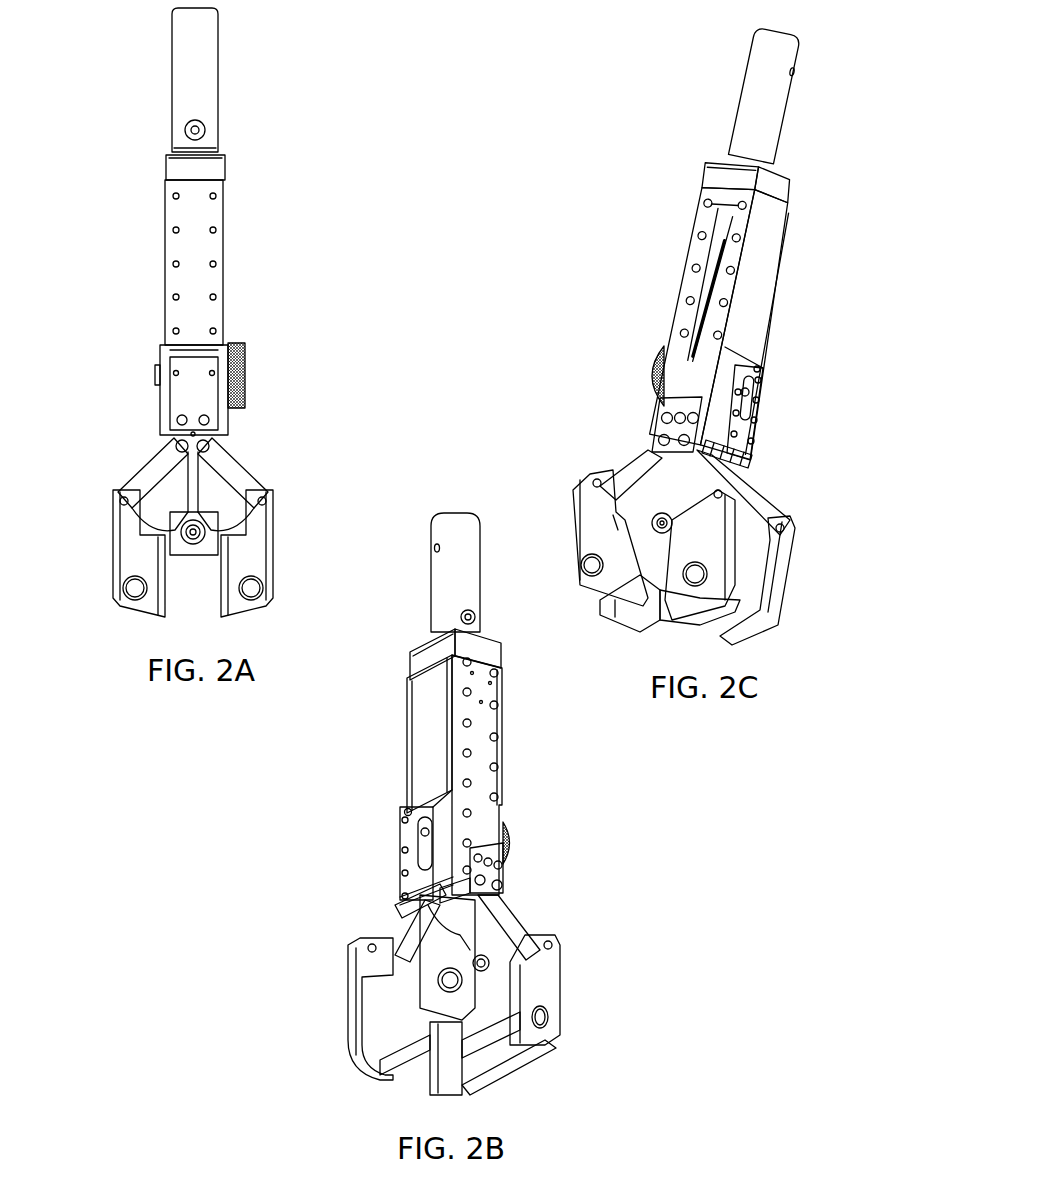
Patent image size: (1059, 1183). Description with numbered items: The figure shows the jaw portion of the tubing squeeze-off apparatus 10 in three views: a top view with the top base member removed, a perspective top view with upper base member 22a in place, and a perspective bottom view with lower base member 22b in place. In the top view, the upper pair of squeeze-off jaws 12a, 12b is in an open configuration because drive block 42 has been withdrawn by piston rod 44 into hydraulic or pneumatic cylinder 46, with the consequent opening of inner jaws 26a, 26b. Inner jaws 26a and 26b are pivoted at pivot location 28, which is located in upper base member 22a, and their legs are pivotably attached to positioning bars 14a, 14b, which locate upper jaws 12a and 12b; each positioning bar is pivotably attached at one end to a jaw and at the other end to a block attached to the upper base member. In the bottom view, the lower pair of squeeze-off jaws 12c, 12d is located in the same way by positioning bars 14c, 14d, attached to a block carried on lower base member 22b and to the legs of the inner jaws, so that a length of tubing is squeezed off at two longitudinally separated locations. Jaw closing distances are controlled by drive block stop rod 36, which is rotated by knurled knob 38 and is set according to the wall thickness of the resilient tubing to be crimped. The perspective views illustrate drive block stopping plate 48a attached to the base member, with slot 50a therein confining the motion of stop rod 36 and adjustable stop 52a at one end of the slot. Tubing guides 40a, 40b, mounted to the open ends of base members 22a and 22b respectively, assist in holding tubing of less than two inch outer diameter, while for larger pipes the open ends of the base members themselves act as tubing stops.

In FIG. 2A, the squeeze-off apparatus 10 is at (286, 133).
In FIG. 2A, the upper squeeze-off jaw 12a is at (99, 553).
In FIG. 2C, the upper squeeze-off jaw 12a is at (794, 580).
In FIG. 2B, the upper squeeze-off jaw 12a is at (366, 957).
In FIG. 2A, the upper squeeze-off jaw 12b is at (280, 553).
In FIG. 2B, the upper squeeze-off jaw 12b is at (585, 990).
In FIG. 2C, the lower squeeze-off jaw 12c is at (574, 538).
In FIG. 2C, the lower squeeze-off jaw 12d is at (760, 566).
In FIG. 2B, the lower squeeze-off jaw 12d is at (318, 1009).
In FIG. 2C, the positioning bar 14a is at (783, 488).
In FIG. 2B, the positioning bar 14a is at (356, 877).
In FIG. 2B, the positioning bar 14b is at (538, 906).
In FIG. 2C, the positioning bar 14c is at (607, 466).
In FIG. 2C, the positioning bar 14d is at (785, 442).
In FIG. 2B, the positioning bar 14d is at (344, 912).
In FIG. 2B, the upper base member 22a is at (497, 836).
In FIG. 2C, the lower base member 22b is at (692, 241).
In FIG. 2A, the inner jaw 26a is at (110, 484).
In FIG. 2B, the inner jaw 26a is at (341, 931).
In FIG. 2A, the inner jaw 26b is at (267, 482).
In FIG. 2B, the inner jaw 26b is at (561, 1076).
In FIG. 2A, the pivot location 28 is at (215, 577).
In FIG. 2C, the drive block stop rod 36 is at (792, 400).
In FIG. 2B, the drive block stop rod 36 is at (348, 824).
In FIG. 2C, the knurled knob 38 is at (604, 378).
In FIG. 2B, the knurled knob 38 is at (543, 816).
In FIG. 2B, the tubing guide 40a is at (550, 1035).
In FIG. 2B, the tubing guide 40b is at (352, 1065).
In FIG. 2A, the drive block 42 is at (205, 406).
In FIG. 2A, the piston rod 44 is at (131, 251).
In FIG. 2A, the hydraulic or pneumatic cylinder 46 is at (206, 266).
In FIG. 2C, the drive block stopping plate 48a is at (797, 344).
In FIG. 2B, the drive block stopping plate 48a is at (327, 764).
In FIG. 2C, the slot 50a is at (804, 393).
In FIG. 2B, the slot 50a is at (337, 823).
In FIG. 2C, the adjustable stop 52a is at (805, 402).
In FIG. 2B, the adjustable stop 52a is at (336, 836).